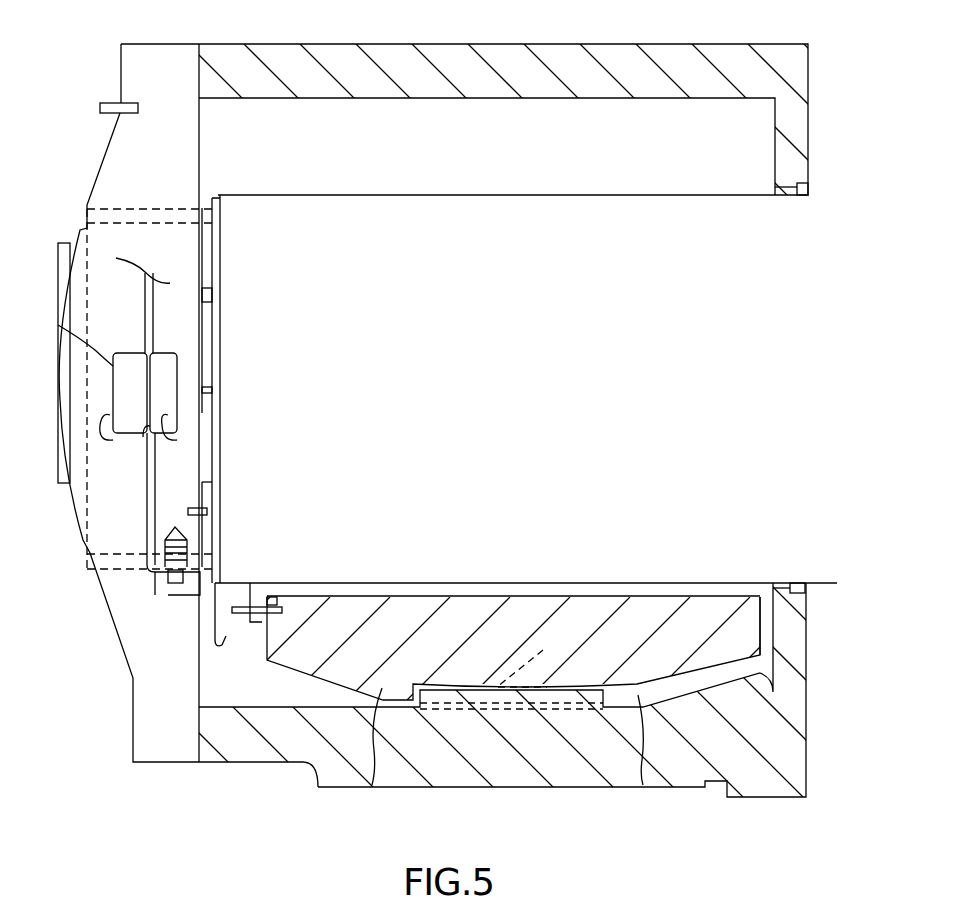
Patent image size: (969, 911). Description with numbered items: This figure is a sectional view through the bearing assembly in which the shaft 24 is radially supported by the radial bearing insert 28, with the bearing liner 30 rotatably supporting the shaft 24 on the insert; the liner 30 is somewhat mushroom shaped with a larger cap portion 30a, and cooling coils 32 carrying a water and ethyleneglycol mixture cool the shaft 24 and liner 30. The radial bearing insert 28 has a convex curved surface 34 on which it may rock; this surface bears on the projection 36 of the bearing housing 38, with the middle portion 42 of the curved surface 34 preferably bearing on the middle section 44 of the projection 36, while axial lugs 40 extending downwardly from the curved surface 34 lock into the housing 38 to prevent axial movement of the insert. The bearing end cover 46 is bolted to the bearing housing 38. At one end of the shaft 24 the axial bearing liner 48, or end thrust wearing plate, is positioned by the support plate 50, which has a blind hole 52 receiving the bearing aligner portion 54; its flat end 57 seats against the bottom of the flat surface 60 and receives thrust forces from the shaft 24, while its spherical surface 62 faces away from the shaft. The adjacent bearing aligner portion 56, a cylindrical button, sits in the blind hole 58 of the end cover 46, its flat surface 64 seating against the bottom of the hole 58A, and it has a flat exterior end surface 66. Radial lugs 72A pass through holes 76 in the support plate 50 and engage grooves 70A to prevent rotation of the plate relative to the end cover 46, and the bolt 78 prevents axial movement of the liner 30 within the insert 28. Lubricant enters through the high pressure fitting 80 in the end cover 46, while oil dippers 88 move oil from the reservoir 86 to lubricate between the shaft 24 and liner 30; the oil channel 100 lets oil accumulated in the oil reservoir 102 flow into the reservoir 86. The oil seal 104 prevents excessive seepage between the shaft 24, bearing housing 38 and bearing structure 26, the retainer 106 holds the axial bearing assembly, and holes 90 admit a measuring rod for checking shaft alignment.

The shaft 24 is at (697, 288).
The bearing structure 26 is at (266, 778).
The radial bearing insert 28 is at (757, 642).
The bearing liner 30 is at (742, 586).
The cap portion 30a is at (270, 592).
The cooling coils 32 is at (455, 598).
The curved surface 34 is at (582, 688).
The projection 36 is at (565, 697).
The bearing housing 38 is at (768, 749).
The axial lugs 40 is at (512, 753).
The middle portion 42 is at (538, 680).
The middle section 44 is at (512, 702).
The bearing end cover 46 is at (135, 147).
The axial bearing liner 48 is at (208, 254).
The support plate 50 is at (206, 291).
The blind hole 52 is at (165, 355).
The bearing aligner portion 54 is at (172, 362).
The bearing aligner portion 56 is at (66, 338).
The flat end 57 is at (180, 382).
The blind hole 58 is at (125, 355).
The hole 58A is at (113, 386).
The flat surface 60 is at (180, 398).
The spherical surface 62 is at (172, 438).
The flat surface 64 is at (103, 438).
The flat exterior end surface 66 is at (145, 436).
The groove 70A is at (158, 597).
The radial lug 72A is at (167, 574).
The hole 76 is at (180, 534).
The bolt 78 is at (235, 612).
The high pressure fitting 80 is at (110, 103).
The reservoir 86 is at (215, 676).
The oil dippers 88 is at (210, 646).
The holes 90 is at (87, 212).
The oil channel 100 is at (482, 708).
The oil reservoir 102 is at (762, 676).
The oil seal 104 is at (805, 592).
The retainer 106 is at (206, 580).